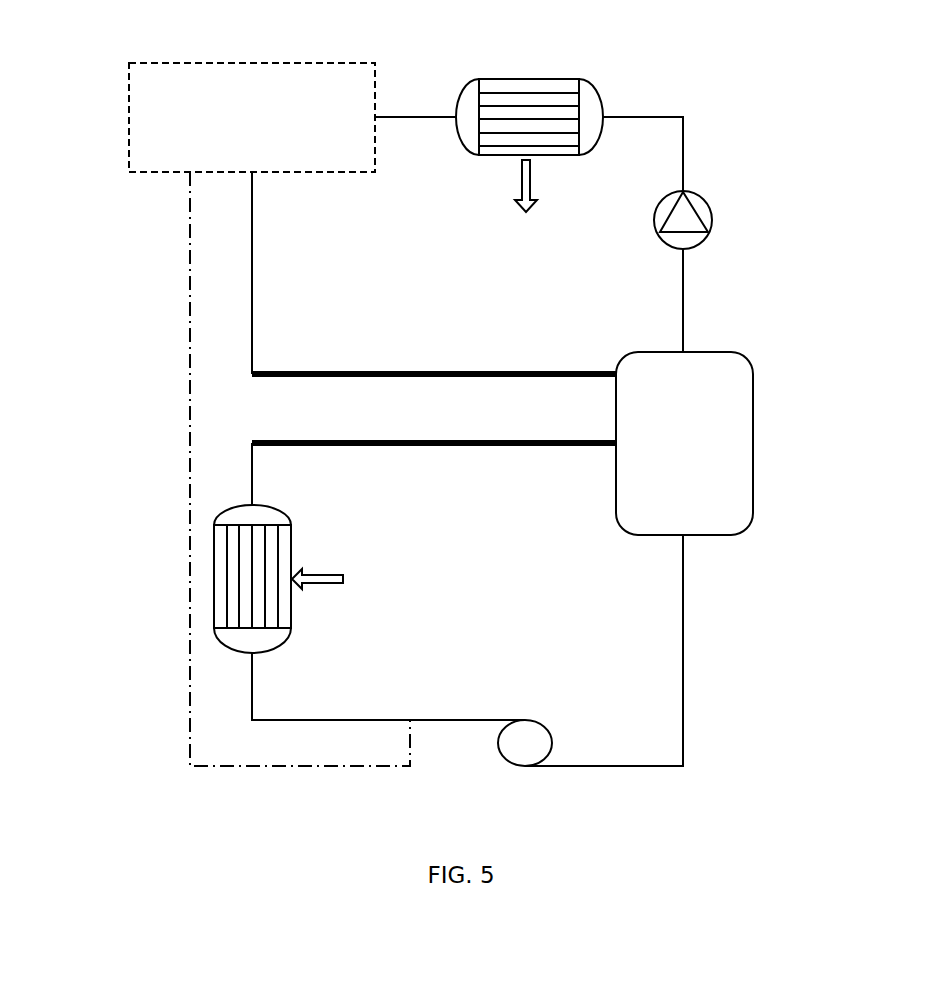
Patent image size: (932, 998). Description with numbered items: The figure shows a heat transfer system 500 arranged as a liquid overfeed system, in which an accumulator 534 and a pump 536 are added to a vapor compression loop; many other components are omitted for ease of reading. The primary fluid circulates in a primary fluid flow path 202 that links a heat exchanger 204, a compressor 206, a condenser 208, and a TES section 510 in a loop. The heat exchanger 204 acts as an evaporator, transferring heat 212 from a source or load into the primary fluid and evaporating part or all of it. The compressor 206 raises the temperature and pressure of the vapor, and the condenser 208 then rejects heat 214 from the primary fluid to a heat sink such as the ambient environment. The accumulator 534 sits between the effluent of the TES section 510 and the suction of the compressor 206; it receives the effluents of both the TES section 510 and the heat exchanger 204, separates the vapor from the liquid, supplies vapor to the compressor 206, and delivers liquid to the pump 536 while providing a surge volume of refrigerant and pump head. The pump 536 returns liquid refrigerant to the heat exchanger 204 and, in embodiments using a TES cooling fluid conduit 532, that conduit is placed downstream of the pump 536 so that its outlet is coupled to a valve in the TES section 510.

The heat transfer system 500 is at (853, 105).
The TES section 510 is at (230, 124).
The condenser 208 is at (564, 75).
The heat 214 is at (548, 191).
The compressor 206 is at (718, 218).
The accumulator 534 is at (673, 459).
The primary fluid flow path 202 is at (698, 722).
The pump 536 is at (545, 727).
The heat exchanger 204 is at (213, 576).
The heat 212 is at (340, 576).
The TES cooling fluid conduit 532 is at (190, 720).